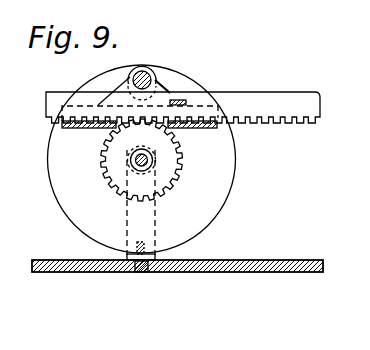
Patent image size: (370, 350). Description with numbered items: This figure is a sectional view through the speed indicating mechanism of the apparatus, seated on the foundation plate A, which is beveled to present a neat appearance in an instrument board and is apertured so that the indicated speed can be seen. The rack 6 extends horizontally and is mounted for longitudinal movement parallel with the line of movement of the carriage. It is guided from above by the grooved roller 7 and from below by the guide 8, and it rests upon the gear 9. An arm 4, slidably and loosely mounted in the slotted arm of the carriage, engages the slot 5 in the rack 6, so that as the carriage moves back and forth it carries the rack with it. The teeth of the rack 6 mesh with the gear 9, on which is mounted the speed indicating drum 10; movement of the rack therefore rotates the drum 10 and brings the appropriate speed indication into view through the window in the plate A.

The arm 4 is at (178, 108).
The slot 5 is at (187, 102).
The rack 6 is at (277, 100).
The grooved roller 7 is at (128, 77).
The guide 8 is at (98, 128).
The gear 9 is at (165, 163).
The speed indicating drum 10 is at (214, 200).
The foundation plate A is at (202, 274).